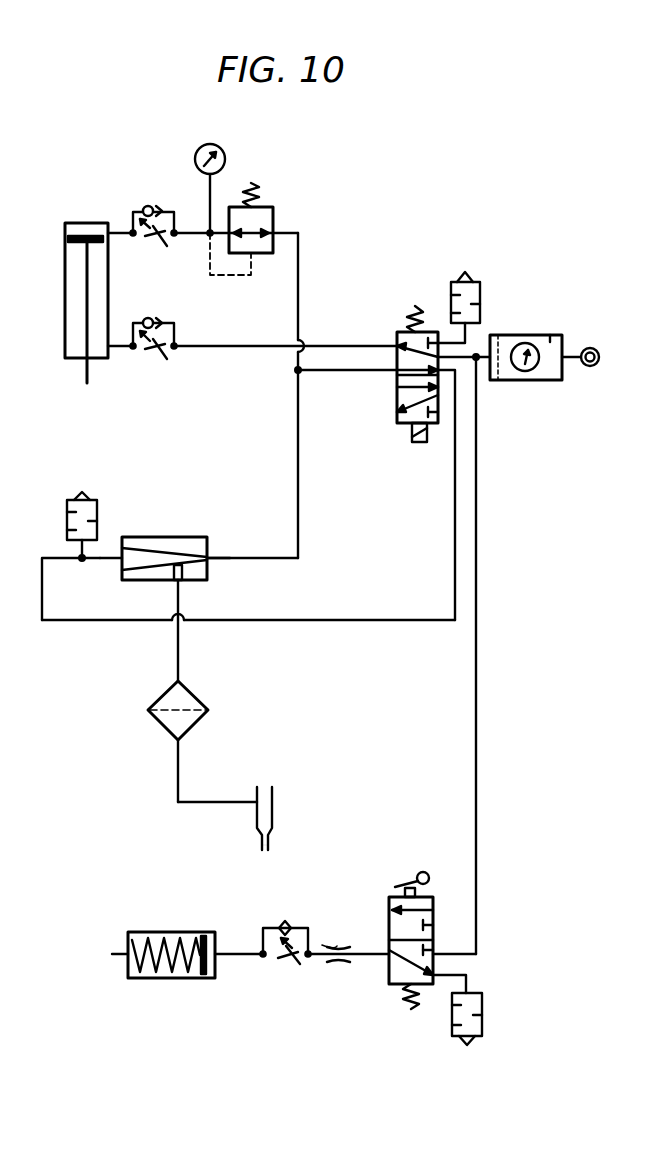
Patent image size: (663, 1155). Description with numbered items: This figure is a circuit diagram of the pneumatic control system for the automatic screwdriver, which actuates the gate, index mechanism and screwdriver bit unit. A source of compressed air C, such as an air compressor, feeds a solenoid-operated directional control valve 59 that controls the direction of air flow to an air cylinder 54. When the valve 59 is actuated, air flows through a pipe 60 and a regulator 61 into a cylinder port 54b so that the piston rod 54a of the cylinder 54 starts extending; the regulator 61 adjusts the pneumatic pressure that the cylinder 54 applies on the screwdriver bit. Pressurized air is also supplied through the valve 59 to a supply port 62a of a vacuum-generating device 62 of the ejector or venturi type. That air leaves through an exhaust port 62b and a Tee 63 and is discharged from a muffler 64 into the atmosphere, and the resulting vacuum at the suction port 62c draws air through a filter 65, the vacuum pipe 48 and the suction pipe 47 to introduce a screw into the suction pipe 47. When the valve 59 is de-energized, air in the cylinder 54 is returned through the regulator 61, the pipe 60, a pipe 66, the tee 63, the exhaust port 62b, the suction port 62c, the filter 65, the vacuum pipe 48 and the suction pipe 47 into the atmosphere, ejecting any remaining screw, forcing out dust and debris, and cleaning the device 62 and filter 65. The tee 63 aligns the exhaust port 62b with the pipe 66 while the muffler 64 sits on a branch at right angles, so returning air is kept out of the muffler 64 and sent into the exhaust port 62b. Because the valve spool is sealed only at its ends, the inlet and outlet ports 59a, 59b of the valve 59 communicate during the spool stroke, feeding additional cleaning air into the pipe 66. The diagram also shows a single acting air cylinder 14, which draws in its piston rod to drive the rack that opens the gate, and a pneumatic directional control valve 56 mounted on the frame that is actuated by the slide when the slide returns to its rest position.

The single acting air cylinder 14 is at (172, 979).
The suction pipe 47 is at (270, 840).
The vacuum pipe 48 is at (274, 792).
The air cylinder 54 is at (65, 285).
The piston rod 54a is at (86, 318).
The cylinder port 54b is at (110, 236).
The pneumatic directional control valve 56 is at (403, 890).
The solenoid-operated directional control valve 59 is at (415, 312).
The inlet port 59a is at (445, 355).
The outlet port 59b is at (441, 372).
The pipe 60 is at (352, 373).
The regulator 61 is at (262, 187).
The vacuum-generating device 62 is at (183, 536).
The supply port 62a is at (211, 553).
The exhaust port 62b is at (120, 553).
The suction port 62c is at (181, 584).
The Tee 63 is at (78, 556).
The muffler 64 is at (80, 496).
The filter 65 is at (200, 700).
The pipe 66 is at (395, 619).
The source of compressed air C is at (592, 368).